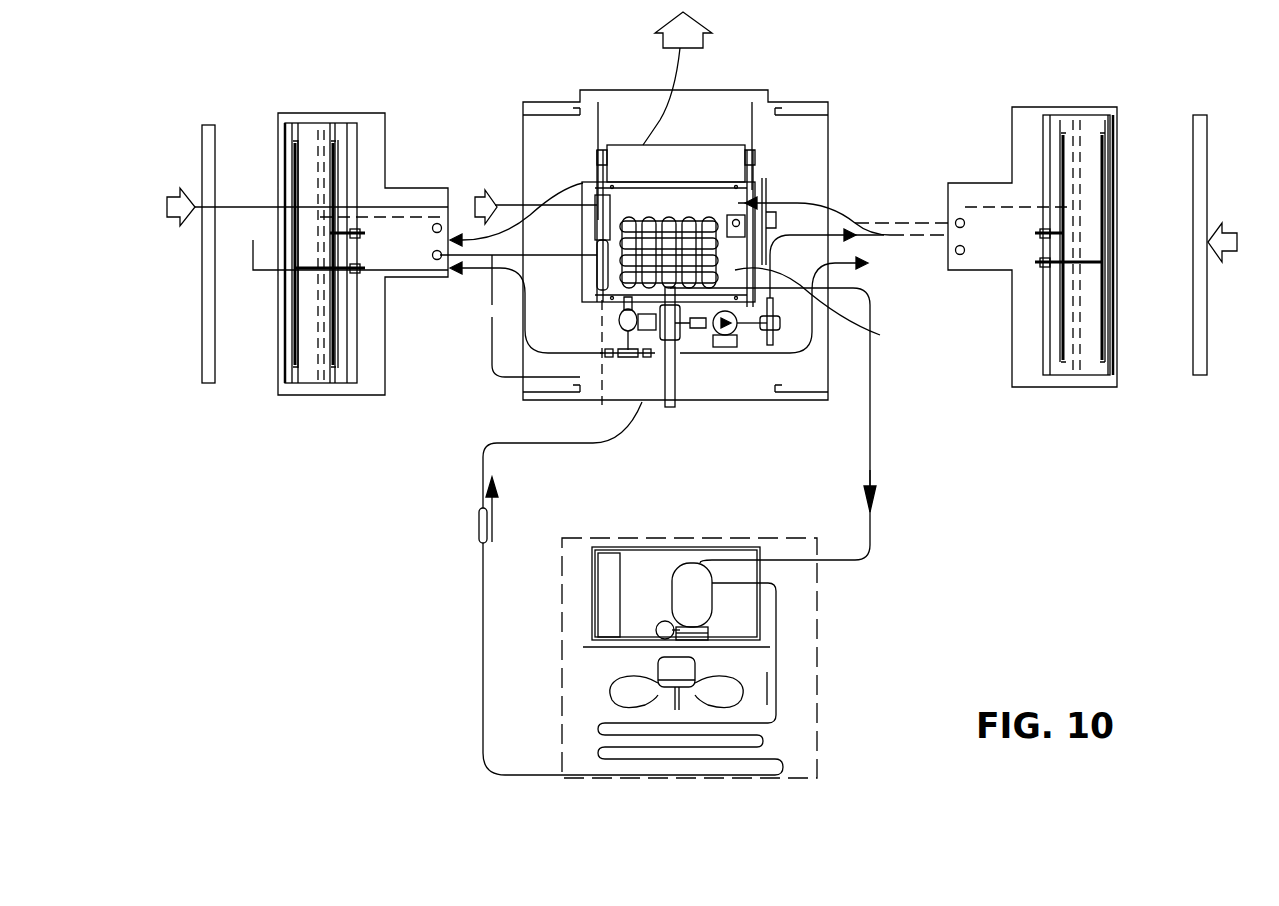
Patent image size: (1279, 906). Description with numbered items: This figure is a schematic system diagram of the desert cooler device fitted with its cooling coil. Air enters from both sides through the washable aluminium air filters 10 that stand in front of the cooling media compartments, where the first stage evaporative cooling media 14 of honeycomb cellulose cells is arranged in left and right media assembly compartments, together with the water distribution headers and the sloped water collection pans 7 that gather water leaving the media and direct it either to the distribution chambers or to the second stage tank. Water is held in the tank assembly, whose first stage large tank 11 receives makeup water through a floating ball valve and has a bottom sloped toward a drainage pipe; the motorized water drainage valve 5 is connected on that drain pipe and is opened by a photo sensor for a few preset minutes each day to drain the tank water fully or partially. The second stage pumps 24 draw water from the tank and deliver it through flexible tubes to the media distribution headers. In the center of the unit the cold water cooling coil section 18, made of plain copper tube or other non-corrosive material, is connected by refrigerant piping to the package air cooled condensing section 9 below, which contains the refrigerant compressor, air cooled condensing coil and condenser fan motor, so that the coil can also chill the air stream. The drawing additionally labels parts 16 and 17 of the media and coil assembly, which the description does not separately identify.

The motorized water drainage valve 5 is at (703, 357).
The water collection pans 7 is at (300, 113).
The package air cooled condensing section 9 is at (818, 688).
The aluminium air filters 10 is at (202, 150).
The first stage large tank 11 is at (670, 182).
The first stage evaporative cooling media 14 is at (302, 378).
The insulating plate 16 is at (340, 378).
The evaporator coil 17 is at (738, 205).
The cold water cooling coil section 18 is at (830, 309).
The second stage pumps 24 is at (735, 347).